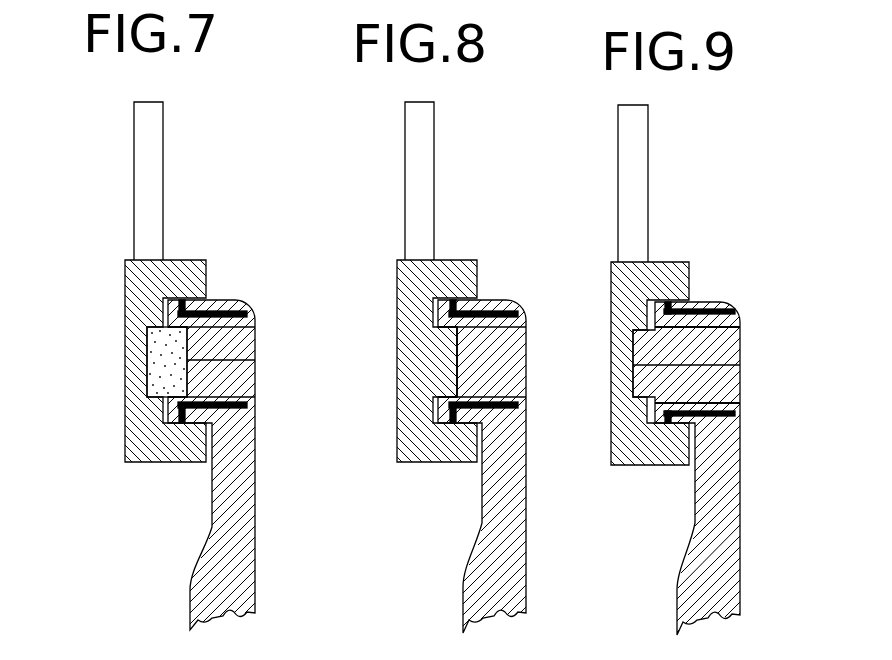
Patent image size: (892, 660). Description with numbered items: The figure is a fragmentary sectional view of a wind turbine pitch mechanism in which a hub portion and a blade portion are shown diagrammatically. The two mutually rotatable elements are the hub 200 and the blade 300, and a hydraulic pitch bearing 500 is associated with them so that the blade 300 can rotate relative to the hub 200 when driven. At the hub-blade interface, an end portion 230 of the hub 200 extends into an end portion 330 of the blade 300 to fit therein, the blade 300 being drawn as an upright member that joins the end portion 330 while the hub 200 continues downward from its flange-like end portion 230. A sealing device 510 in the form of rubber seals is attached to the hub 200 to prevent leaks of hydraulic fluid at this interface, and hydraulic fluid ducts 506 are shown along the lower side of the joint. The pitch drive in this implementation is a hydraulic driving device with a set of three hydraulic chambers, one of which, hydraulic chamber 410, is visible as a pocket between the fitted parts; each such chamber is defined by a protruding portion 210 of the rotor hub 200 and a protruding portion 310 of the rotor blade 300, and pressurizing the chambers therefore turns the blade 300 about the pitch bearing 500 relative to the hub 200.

In FIG. 7, the hub 200 is at (210, 465).
In FIG. 8, the hub 200 is at (480, 466).
In FIG. 9, the hub 200 is at (693, 468).
In FIG. 9, the protruding portion of the rotor hub 210 is at (643, 370).
In FIG. 7, the end portion of the hub 230 is at (235, 338).
In FIG. 8, the end portion of the hub 230 is at (508, 338).
In FIG. 9, the end portion of the hub 230 is at (722, 338).
In FIG. 7, the blade 300 is at (133, 125).
In FIG. 8, the blade 300 is at (404, 125).
In FIG. 9, the blade 300 is at (617, 130).
In FIG. 8, the protruding portion of the rotor blade 310 is at (430, 372).
In FIG. 7, the end portion of the blade 330 is at (186, 276).
In FIG. 8, the end portion of the blade 330 is at (458, 276).
In FIG. 9, the end portion of the blade 330 is at (668, 272).
In FIG. 7, the hydraulic chamber 410 is at (150, 347).
In FIG. 7, the pitch bearing 500 is at (184, 324).
In FIG. 8, the pitch bearing 500 is at (456, 344).
In FIG. 9, the pitch bearing 500 is at (703, 365).
In FIG. 7, the hydraulic fluid ducts 506 is at (235, 410).
In FIG. 8, the hydraulic fluid ducts 506 is at (508, 410).
In FIG. 9, the hydraulic fluid ducts 506 is at (727, 412).
In FIG. 7, the sealing device 510 is at (207, 300).
In FIG. 8, the sealing device 510 is at (478, 300).
In FIG. 9, the sealing device 510 is at (690, 300).